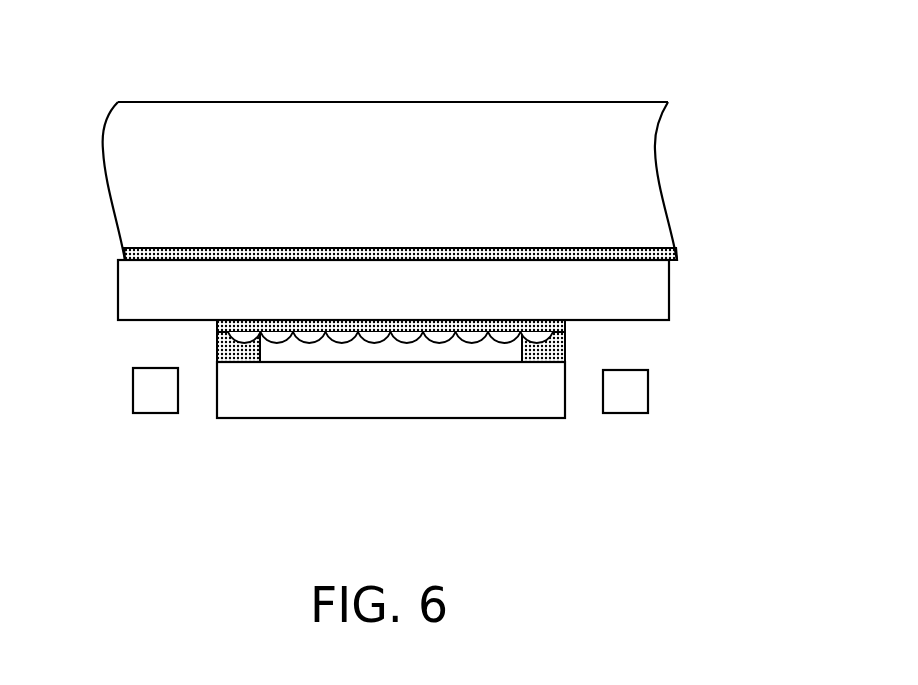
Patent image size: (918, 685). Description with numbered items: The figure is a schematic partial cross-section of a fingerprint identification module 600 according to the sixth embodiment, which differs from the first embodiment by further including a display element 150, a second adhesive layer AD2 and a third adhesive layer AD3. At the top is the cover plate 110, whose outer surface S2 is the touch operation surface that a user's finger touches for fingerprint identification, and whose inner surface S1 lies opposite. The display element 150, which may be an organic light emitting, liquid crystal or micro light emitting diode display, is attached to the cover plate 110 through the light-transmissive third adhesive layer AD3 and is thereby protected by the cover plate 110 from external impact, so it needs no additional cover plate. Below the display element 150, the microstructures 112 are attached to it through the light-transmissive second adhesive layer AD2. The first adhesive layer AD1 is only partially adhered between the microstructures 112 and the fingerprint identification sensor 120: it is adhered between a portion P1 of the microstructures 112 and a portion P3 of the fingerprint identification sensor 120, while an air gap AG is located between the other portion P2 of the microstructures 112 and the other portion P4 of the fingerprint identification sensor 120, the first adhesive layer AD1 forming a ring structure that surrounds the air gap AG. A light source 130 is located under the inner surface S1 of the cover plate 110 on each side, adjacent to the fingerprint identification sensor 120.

The fingerprint identification module 600 is at (409, 271).
The cover plate 110 is at (628, 167).
The outer surface S2 is at (614, 99).
The inner surface S1 is at (645, 252).
The third adhesive layer AD3 is at (126, 254).
The display element 150 is at (643, 303).
The second adhesive layer AD2 is at (222, 320).
The first adhesive layer AD1 is at (215, 349).
The microstructures 112 is at (440, 342).
The air gap AG is at (305, 357).
The fingerprint identification sensor 120 is at (500, 408).
The light source 130 is at (147, 392).
The portion of the microstructures P1 is at (258, 318).
The other portion of the microstructures P2 is at (520, 318).
The portion of the fingerprint identification sensor P3 is at (260, 383).
The other portion of the fingerprint identification sensor P4 is at (520, 383).